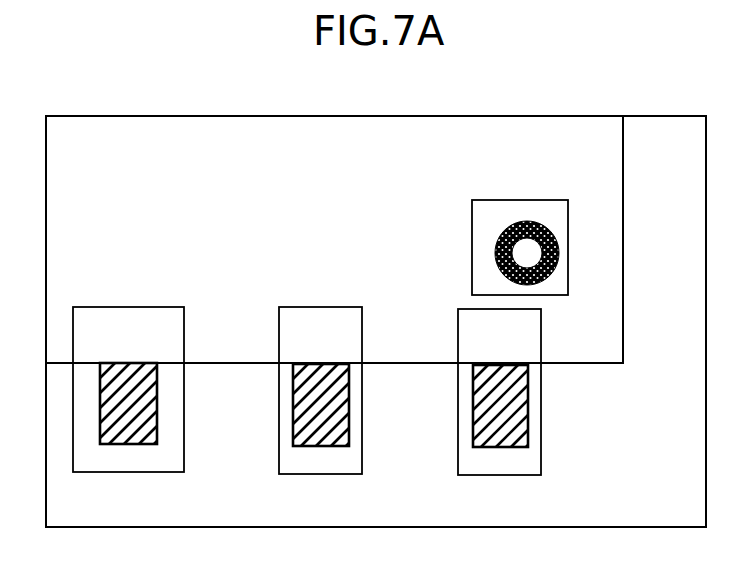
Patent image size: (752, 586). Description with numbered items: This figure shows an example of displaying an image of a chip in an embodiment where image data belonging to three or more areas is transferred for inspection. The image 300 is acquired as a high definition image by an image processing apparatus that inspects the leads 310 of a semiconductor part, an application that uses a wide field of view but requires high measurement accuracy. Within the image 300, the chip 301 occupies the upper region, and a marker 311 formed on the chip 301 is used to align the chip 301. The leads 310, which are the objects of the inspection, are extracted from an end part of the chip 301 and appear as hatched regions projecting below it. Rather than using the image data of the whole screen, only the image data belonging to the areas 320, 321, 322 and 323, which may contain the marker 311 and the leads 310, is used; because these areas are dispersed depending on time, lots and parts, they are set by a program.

The image 300 is at (669, 117).
The chip 301 is at (157, 125).
The leads 310 is at (130, 360).
The marker 311 is at (494, 252).
The area 320 is at (522, 200).
The area 321 is at (185, 442).
The area 322 is at (363, 444).
The area 323 is at (543, 446).